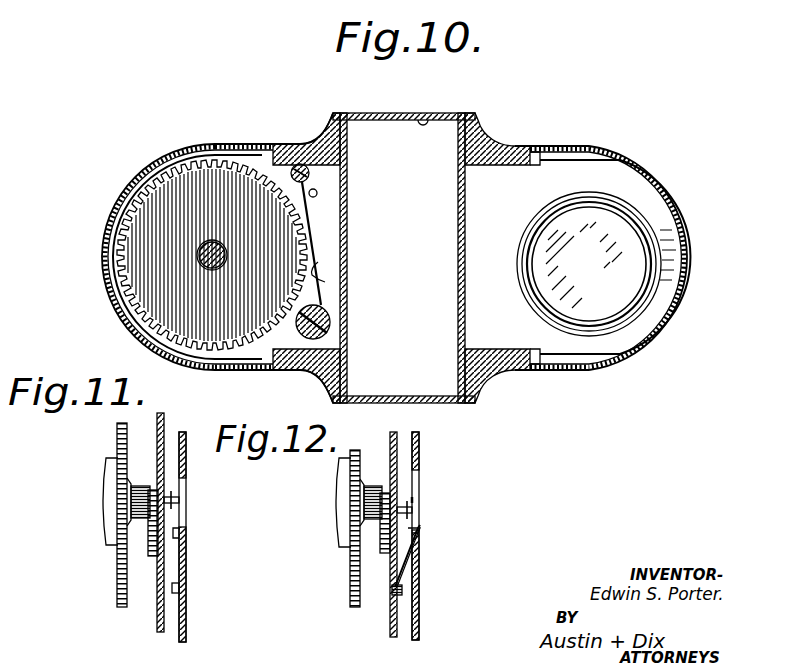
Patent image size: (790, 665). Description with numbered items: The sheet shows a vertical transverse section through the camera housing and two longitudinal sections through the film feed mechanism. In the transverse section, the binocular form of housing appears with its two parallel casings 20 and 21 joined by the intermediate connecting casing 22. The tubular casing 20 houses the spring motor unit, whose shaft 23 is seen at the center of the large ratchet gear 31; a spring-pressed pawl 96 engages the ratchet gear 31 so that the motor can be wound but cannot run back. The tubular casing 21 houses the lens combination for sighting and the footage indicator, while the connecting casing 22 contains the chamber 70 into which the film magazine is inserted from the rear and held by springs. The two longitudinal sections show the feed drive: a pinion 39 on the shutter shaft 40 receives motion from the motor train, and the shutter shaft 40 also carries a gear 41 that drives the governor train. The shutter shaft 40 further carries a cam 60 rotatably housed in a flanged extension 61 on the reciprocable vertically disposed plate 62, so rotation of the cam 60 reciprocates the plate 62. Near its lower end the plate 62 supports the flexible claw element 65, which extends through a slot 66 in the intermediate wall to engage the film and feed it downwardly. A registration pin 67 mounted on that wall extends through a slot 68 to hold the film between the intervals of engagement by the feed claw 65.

In FIG. 10, the tubular casing 20 is at (161, 150).
In FIG. 10, the tubular casing 21 is at (683, 196).
In FIG. 10, the intermediate connecting casing 22 is at (490, 146).
In FIG. 10, the shaft 23 is at (199, 264).
In FIG. 10, the ratchet gear 31 is at (212, 255).
In FIG. 10, the chamber 70 is at (433, 118).
In FIG. 10, the spring-pressed pawl 96 is at (318, 298).
In FIG. 11, the pinion 39 is at (118, 548).
In FIG. 12, the pinion 39 is at (351, 549).
In FIG. 11, the shutter shaft 40 is at (176, 500).
In FIG. 12, the shutter shaft 40 is at (413, 512).
In FIG. 11, the gear 41 is at (122, 607).
In FIG. 12, the gear 41 is at (355, 607).
In FIG. 11, the cam 60 is at (148, 549).
In FIG. 12, the cam 60 is at (385, 551).
In FIG. 11, the flanged extension 61 is at (152, 485).
In FIG. 12, the flanged extension 61 is at (385, 486).
In FIG. 11, the reciprocable vertically disposed plate 62 is at (165, 425).
In FIG. 12, the reciprocable vertically disposed plate 62 is at (393, 444).
In FIG. 12, the flexible claw element 65 is at (421, 531).
In FIG. 12, the slot 66 is at (418, 500).
In FIG. 11, the registration pin 67 is at (186, 533).
In FIG. 11, the slot 68 is at (187, 516).
In FIG. 12, the slot 68 is at (420, 541).